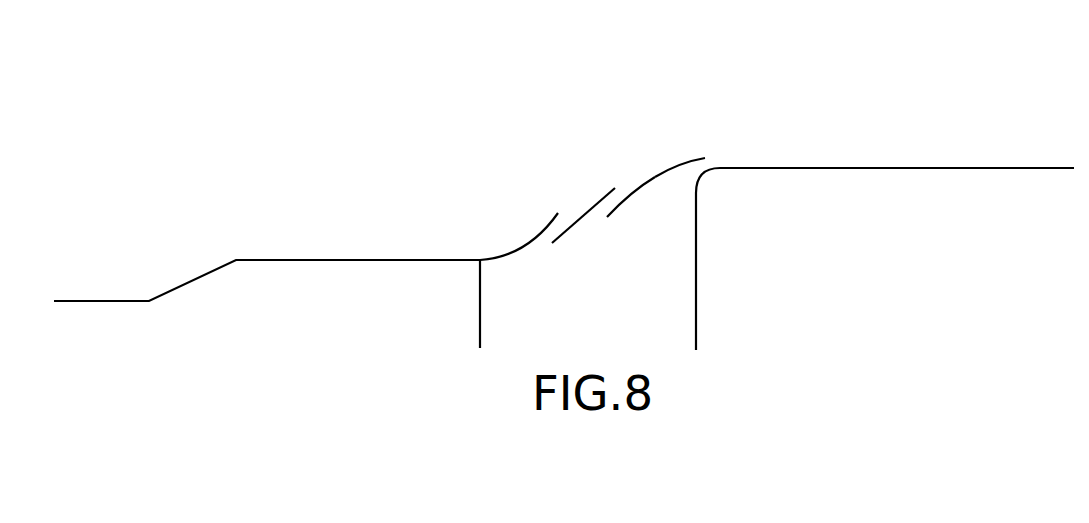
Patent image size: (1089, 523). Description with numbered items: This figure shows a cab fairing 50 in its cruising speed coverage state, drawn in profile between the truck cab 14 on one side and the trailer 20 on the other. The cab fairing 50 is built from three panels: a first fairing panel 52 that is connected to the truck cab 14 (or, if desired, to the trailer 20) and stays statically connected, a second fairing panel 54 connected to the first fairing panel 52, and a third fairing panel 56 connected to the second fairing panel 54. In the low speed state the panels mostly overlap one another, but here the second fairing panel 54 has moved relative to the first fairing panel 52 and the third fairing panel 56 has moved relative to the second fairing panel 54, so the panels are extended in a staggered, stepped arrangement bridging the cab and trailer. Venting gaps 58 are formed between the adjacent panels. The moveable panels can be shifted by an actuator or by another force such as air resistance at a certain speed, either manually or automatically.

The truck cab 14 is at (236, 260).
The trailer 20 is at (898, 168).
The cab fairing 50 is at (540, 220).
The first fairing panel 52 is at (502, 248).
The second fairing panel 54 is at (585, 213).
The third fairing panel 56 is at (655, 175).
The venting gaps 58 is at (622, 188).